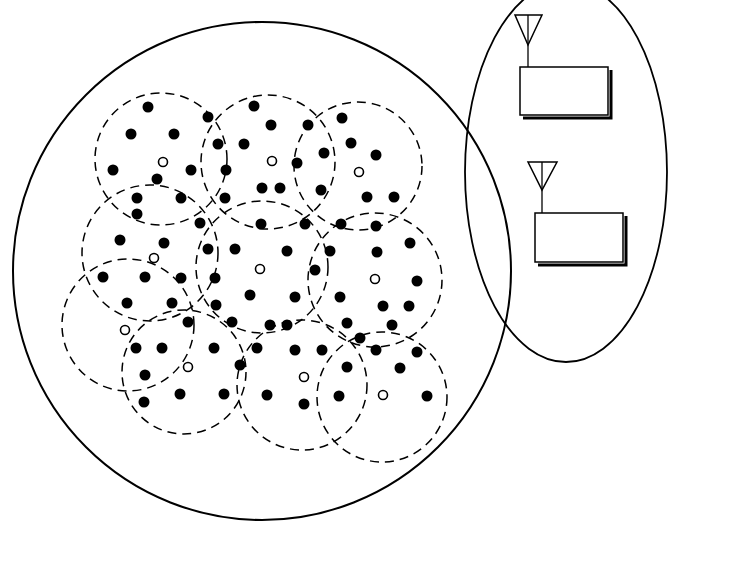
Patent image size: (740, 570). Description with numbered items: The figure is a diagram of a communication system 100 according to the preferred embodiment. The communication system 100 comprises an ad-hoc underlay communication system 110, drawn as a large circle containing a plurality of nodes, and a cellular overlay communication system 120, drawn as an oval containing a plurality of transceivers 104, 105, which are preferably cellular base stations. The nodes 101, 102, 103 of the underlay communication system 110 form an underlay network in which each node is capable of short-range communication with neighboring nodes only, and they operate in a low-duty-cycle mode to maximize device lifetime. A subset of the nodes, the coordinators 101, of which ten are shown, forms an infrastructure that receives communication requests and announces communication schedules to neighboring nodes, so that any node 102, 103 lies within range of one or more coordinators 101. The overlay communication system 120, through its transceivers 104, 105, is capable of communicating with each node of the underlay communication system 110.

The communication system 100 is at (596, 540).
The coordinator node 101 is at (159, 162).
The node 102 is at (148, 100).
The node 103 is at (127, 137).
The transceiver 104 is at (578, 213).
The transceiver 105 is at (565, 67).
The ad-hoc underlay communication system 110 is at (89, 88).
The cellular overlay communication system 120 is at (560, 362).